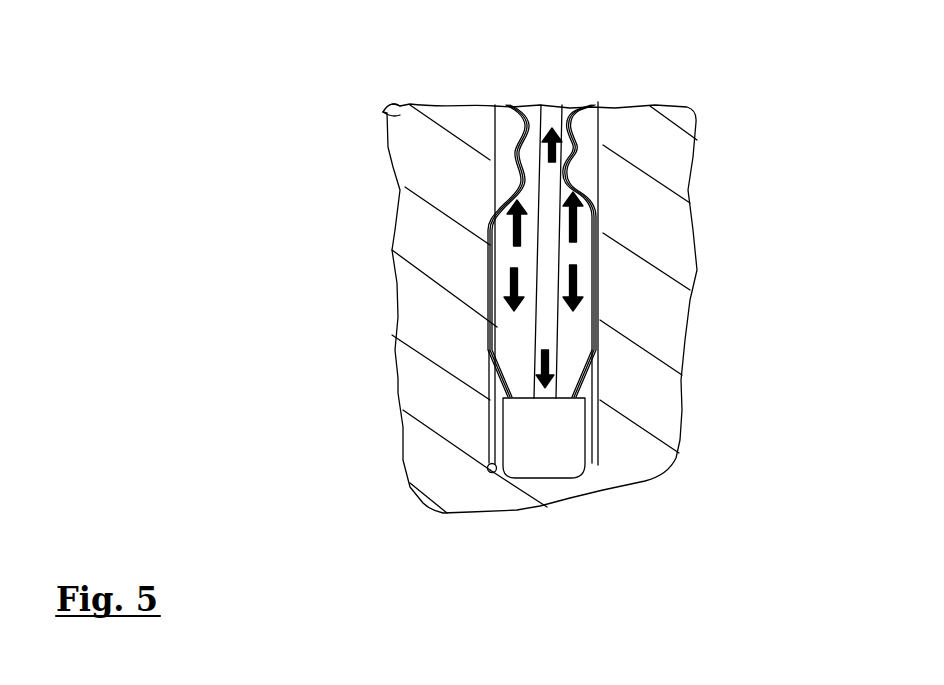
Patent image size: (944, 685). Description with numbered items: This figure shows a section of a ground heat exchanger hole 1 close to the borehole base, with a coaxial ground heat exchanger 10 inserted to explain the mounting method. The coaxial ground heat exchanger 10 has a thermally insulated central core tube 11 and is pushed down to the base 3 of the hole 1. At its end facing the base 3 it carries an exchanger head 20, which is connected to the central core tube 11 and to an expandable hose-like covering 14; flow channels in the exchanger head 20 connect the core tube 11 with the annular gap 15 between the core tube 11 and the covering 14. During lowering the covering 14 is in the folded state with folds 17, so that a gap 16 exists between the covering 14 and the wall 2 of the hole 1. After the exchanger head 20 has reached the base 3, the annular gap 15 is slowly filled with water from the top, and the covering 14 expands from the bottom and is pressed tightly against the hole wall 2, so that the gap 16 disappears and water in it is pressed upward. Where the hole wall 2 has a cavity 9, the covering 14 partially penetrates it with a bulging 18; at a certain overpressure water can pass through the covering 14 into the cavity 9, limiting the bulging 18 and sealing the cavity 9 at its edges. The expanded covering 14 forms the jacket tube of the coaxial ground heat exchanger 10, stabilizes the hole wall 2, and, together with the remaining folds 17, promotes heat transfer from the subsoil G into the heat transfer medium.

The ground heat exchanger hole 1 is at (598, 98).
The hole wall 2 is at (495, 134).
The base of the hole 3 is at (489, 471).
The cavity 9 is at (487, 258).
The coaxial ground heat exchanger 10 is at (607, 282).
The central core tube 11 is at (543, 330).
The expandable hose-like covering 14 is at (600, 203).
The annular gap 15 is at (497, 307).
The gap 16 is at (517, 117).
The folds 17 is at (568, 131).
The bulging 18 is at (486, 232).
The exchanger head 20 is at (567, 455).
The subsoil G is at (400, 112).